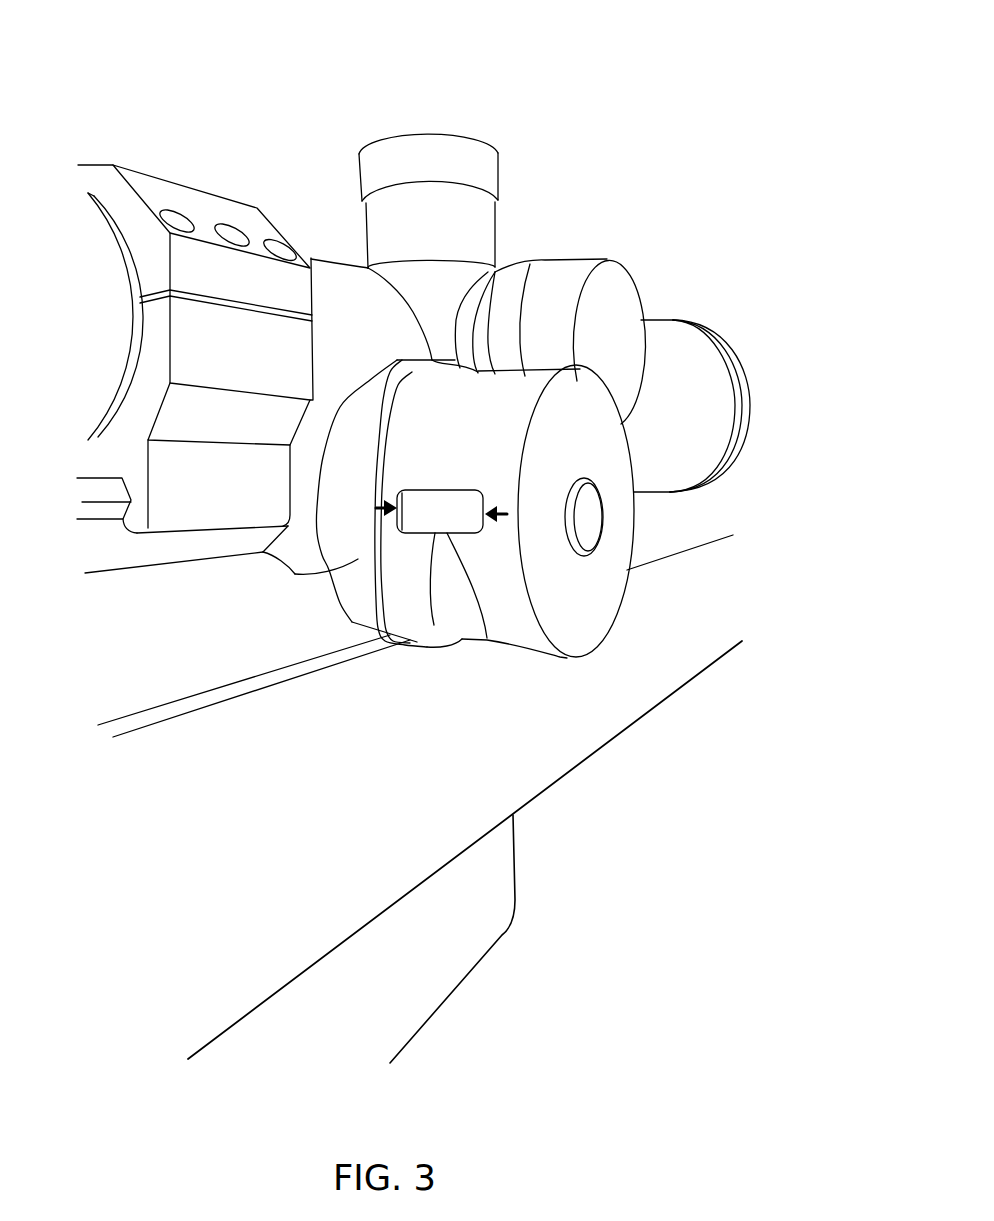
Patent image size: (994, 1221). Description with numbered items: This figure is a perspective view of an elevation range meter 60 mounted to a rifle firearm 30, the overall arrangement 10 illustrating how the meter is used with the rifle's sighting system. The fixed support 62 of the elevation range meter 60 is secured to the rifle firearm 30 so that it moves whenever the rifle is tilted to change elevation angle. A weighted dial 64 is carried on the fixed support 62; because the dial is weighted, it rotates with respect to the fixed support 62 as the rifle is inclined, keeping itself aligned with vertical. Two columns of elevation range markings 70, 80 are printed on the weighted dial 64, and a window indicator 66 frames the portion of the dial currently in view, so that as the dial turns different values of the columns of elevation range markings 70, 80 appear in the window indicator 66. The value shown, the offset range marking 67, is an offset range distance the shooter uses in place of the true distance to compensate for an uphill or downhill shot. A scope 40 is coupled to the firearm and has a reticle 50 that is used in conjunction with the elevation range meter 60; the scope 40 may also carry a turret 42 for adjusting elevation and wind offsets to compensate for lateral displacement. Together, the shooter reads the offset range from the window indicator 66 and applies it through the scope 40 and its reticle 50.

The riflescope 10 is at (700, 110).
The rifle firearm 30 is at (152, 192).
The scope 40 is at (683, 343).
The turret 42 is at (463, 148).
The reticle 50 is at (390, 277).
The elevation range meter 60 is at (585, 484).
The fixed support 62 is at (295, 573).
The weighted dial 64 is at (383, 630).
The window indicator 66 is at (434, 625).
The offset range marking 67 is at (487, 638).
The column of elevation range markings 70 is at (423, 497).
The column of elevation range markings 80 is at (472, 498).